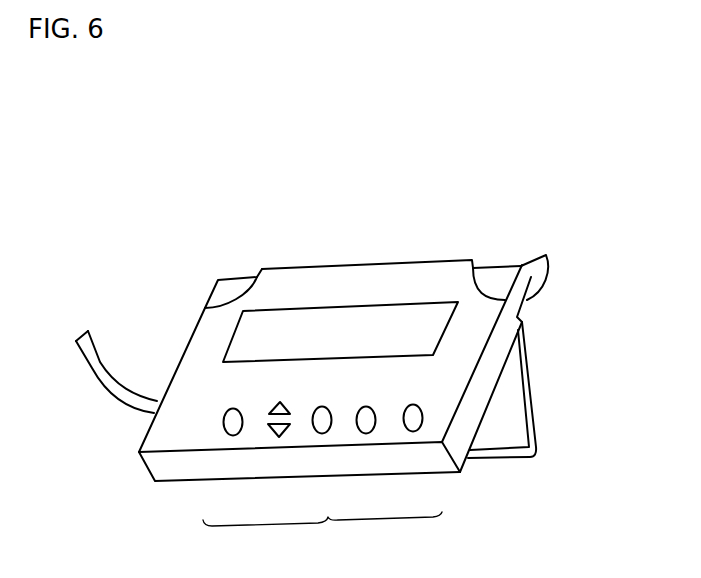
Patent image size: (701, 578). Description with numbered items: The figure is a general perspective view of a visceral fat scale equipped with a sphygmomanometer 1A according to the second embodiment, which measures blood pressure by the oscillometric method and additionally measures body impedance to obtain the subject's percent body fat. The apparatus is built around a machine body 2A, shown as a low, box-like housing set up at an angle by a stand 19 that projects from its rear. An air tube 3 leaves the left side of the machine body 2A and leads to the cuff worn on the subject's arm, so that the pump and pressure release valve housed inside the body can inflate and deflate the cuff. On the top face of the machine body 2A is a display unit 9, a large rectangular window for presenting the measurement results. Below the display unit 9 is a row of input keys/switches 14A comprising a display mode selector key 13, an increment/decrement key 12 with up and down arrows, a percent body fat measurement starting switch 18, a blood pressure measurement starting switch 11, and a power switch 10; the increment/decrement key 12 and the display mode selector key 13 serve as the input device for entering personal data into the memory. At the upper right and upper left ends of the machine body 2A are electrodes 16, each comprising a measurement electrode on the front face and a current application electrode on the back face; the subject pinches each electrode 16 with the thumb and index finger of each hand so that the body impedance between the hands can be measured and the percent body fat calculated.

The visceral fat scale equipped with a sphygmomanometer 1A is at (341, 204).
The machine body 2A is at (318, 267).
The display unit 9 is at (360, 327).
The electrodes 16 is at (225, 283).
The stand 19 is at (537, 430).
The air tube 3 is at (103, 390).
The display mode selector key 13 is at (233, 435).
The increment/decrement key 12 is at (277, 437).
The percent body fat measurement starting switch 18 is at (322, 433).
The blood pressure measurement starting switch 11 is at (366, 433).
The power switch 10 is at (413, 431).
The operation section 14A is at (322, 540).